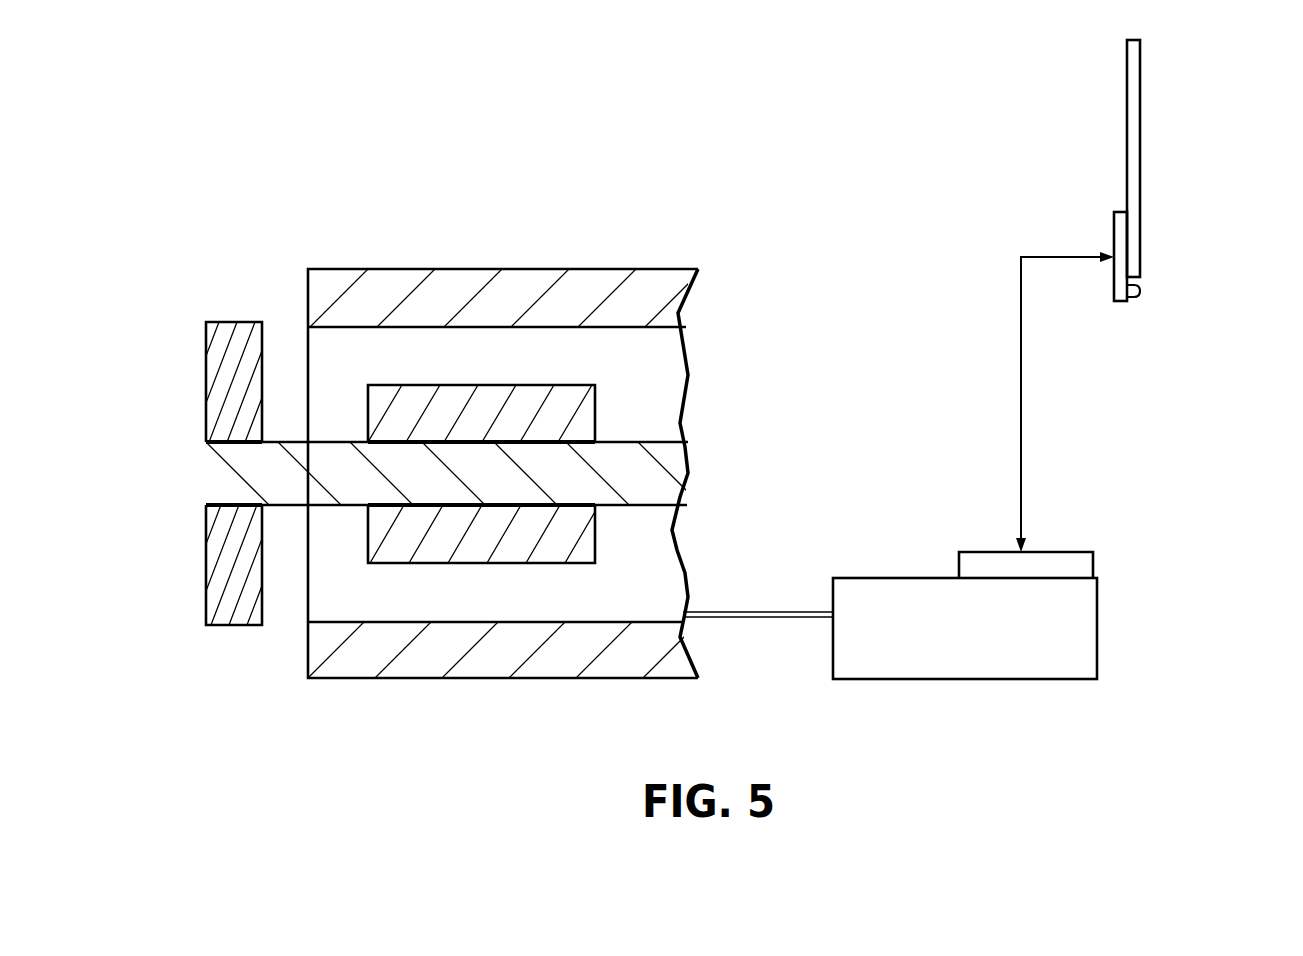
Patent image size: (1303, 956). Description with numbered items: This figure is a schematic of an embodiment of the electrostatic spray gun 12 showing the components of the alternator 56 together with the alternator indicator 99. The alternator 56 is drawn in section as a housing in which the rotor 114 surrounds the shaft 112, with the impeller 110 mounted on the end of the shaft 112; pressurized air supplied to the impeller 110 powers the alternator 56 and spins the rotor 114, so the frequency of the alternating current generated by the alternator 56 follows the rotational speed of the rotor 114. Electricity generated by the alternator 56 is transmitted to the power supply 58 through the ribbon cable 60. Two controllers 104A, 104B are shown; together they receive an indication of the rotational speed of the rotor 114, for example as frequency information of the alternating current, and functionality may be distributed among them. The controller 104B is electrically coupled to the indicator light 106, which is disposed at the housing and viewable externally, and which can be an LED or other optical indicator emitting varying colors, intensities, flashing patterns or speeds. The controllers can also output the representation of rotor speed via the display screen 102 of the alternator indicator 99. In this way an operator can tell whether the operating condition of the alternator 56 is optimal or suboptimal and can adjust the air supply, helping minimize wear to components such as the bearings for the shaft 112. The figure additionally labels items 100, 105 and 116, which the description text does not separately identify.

The electrostatic spray gun 12 is at (912, 240).
The alternator 56 is at (375, 693).
The power supply 58 is at (873, 614).
The ribbon cable 60 is at (768, 611).
The alternator indicator 99 is at (1210, 245).
The position sensing assembly 100 is at (1062, 418).
The display screen 102 is at (1140, 136).
The controller 104A is at (1065, 552).
The controller 104B is at (1113, 222).
The signal path 105 is at (1021, 365).
The indicator light 106 is at (1140, 291).
The impeller 110 is at (205, 362).
The shaft 112 is at (287, 507).
The rotor 114 is at (495, 565).
The stator wall 116 is at (538, 269).